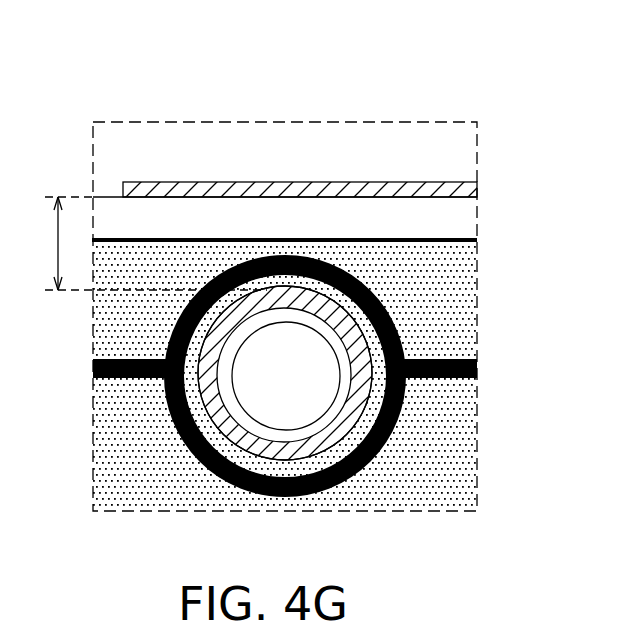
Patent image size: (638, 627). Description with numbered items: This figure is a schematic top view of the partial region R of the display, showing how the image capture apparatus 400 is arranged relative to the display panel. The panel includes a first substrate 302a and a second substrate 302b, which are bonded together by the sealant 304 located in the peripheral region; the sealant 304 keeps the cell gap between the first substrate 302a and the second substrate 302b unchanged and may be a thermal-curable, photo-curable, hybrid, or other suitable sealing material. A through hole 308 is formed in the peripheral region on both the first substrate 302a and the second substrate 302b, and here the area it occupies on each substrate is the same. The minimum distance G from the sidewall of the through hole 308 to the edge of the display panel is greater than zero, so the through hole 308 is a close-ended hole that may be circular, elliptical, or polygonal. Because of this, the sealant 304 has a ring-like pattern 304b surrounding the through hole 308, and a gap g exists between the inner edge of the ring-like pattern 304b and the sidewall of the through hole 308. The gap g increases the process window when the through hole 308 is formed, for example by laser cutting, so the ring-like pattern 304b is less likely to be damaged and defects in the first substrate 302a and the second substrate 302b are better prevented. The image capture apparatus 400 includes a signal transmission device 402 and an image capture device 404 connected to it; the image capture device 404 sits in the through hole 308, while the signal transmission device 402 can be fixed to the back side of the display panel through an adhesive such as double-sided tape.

The partial region R is at (450, 122).
The minimum distance G is at (144, 243).
The image capture apparatus 400 is at (272, 56).
The signal transmission device 402 is at (200, 192).
The image capture device 404 is at (293, 352).
The through hole 308 is at (360, 305).
The first substrate 302a is at (450, 197).
The second substrate 302b is at (450, 240).
The sealant 304 is at (455, 357).
The ring-like pattern 304b is at (372, 455).
The gap g is at (343, 450).